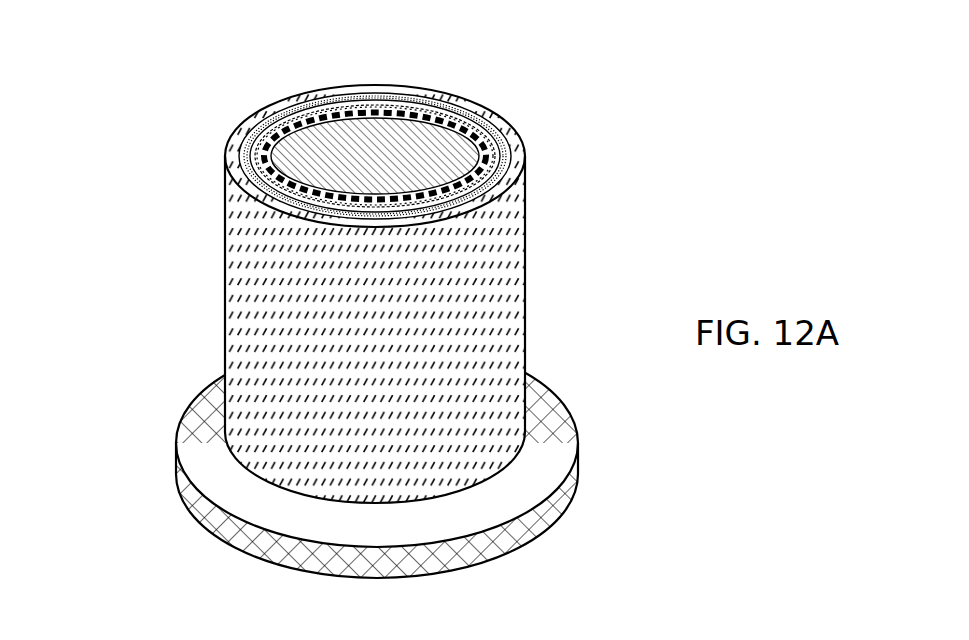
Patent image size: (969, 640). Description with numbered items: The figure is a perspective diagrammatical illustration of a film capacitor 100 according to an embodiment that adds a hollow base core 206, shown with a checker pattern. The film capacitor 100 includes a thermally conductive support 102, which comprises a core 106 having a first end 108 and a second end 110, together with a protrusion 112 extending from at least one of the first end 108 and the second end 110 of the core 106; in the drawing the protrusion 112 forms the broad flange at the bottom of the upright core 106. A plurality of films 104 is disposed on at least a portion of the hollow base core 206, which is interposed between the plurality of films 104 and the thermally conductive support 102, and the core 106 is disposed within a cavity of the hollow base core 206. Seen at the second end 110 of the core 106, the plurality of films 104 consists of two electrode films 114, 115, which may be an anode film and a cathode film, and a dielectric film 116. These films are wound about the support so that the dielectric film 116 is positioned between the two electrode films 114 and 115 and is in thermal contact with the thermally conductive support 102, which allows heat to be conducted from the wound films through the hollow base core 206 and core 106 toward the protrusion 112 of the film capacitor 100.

The film capacitor 100 is at (122, 204).
The thermally conductive support 102 is at (587, 142).
The plurality of films 104 is at (531, 5).
The core 106 is at (445, 157).
The first end 108 is at (223, 375).
The second end 110 is at (236, 138).
The protrusion 112 is at (560, 398).
The electrode film 114 is at (441, 110).
The electrode film 115 is at (406, 92).
The dielectric film 116 is at (417, 100).
The hollow base core 206 is at (350, 117).